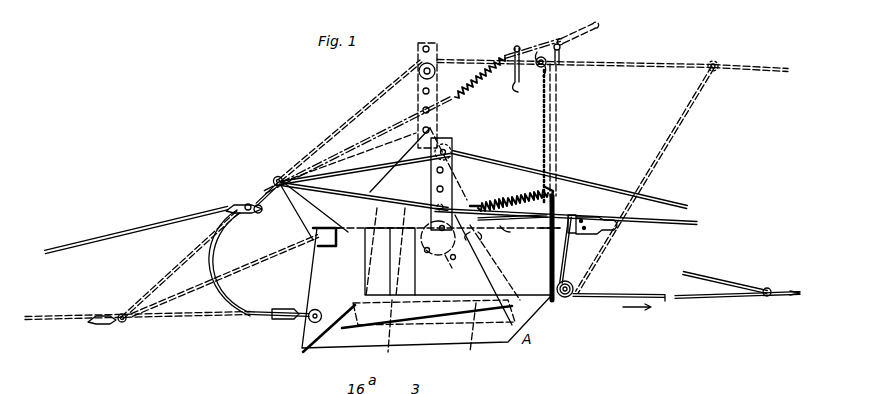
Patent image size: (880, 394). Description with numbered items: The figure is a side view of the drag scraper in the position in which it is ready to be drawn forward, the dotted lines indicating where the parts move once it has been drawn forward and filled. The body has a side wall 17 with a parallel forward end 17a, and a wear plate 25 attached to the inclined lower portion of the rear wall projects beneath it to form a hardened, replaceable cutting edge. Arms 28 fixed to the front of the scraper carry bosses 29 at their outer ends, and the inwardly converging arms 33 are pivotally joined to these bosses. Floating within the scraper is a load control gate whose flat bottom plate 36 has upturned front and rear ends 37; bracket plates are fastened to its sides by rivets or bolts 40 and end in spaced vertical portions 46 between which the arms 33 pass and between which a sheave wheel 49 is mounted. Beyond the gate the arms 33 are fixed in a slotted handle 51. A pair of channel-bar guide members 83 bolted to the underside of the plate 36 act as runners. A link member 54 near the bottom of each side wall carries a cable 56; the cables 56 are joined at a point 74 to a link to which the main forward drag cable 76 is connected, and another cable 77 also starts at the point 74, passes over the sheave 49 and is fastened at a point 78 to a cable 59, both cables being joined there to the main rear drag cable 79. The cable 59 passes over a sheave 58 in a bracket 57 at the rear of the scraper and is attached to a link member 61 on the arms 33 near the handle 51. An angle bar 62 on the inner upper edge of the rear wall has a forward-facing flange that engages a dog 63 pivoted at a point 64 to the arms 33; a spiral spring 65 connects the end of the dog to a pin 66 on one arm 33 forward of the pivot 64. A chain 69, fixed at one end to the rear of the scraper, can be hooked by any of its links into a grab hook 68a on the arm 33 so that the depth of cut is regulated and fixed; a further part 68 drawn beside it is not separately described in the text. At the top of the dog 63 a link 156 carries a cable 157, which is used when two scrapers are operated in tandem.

The main forward drag cable 76 is at (156, 226).
The wear plate 25 is at (236, 203).
The boss 29 is at (276, 176).
The connection point 74 is at (252, 208).
The cable 77 is at (368, 104).
The cable 157 is at (679, 226).
The inwardly converging arms 33 is at (384, 188).
The sheave wheel 49 is at (437, 72).
The vertical portions 46 is at (440, 126).
The grab hook 68a is at (545, 44).
The link member 61 is at (596, 210).
The bolt 68 is at (558, 203).
The chain 69 is at (542, 133).
The link 156 is at (550, 191).
The angle bar 62 is at (549, 250).
The pin 66 is at (502, 202).
The spiral spring 65 is at (530, 194).
The pivotal point 64 is at (538, 211).
The parallel forward end 17a is at (431, 288).
The side wall 17 is at (402, 261).
The rivets or bolts 40 is at (452, 266).
The arms 28 is at (302, 228).
The cable 56 is at (214, 259).
The link member 54 is at (280, 324).
The guide members 83 is at (451, 334).
The dog 63 is at (518, 256).
The plate 36 is at (482, 236).
The upturned ends 37 is at (508, 226).
The slotted handle 51 is at (620, 230).
The bracket 57 is at (572, 250).
The sheave 58 is at (570, 300).
The cable 59 is at (598, 262).
The fastening point 78 is at (764, 300).
The main rear drag cable 79 is at (784, 297).